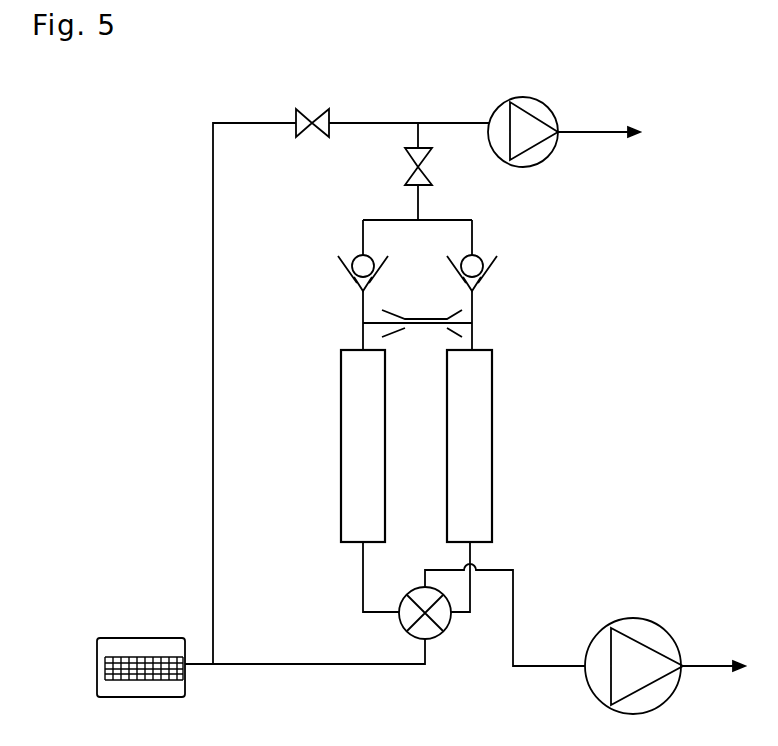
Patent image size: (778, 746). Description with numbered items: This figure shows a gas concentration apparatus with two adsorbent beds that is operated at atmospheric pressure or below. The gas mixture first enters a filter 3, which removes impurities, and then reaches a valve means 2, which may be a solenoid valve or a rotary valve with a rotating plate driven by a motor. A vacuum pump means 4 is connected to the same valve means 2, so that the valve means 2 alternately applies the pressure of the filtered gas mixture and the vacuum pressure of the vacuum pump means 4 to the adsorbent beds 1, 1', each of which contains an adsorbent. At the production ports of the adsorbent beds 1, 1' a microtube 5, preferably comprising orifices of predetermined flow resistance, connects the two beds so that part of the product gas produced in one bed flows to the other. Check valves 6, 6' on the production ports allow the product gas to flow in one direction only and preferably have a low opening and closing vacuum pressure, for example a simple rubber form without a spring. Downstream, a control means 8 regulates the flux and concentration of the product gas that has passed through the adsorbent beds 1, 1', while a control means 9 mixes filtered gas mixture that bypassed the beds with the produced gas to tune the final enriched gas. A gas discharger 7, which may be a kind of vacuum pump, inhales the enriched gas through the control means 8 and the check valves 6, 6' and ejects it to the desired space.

The adsorbent bed 1 is at (338, 444).
The adsorbent bed 1' is at (511, 441).
The valve means 2 is at (450, 622).
The filter 3 is at (158, 628).
The vacuum pump means 4 is at (620, 620).
The microtube 5 is at (426, 313).
The check valve 6 is at (335, 240).
The check valve 6' is at (506, 245).
The gas discharger 7 is at (562, 148).
The control means 8 is at (404, 149).
The control means 9 is at (294, 112).